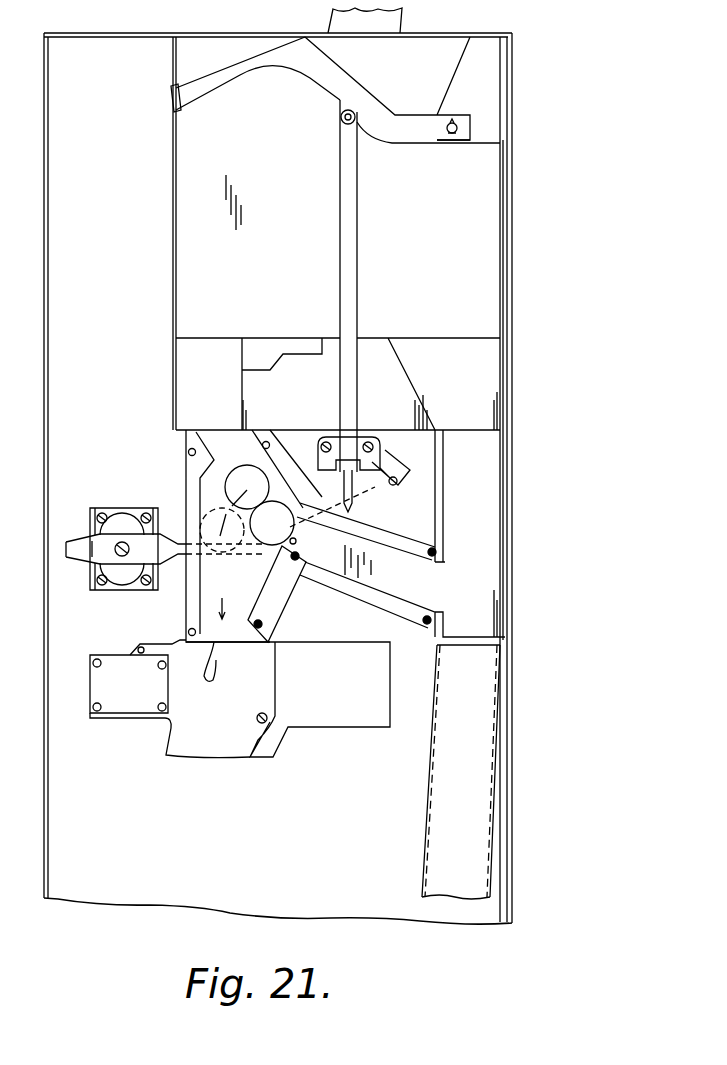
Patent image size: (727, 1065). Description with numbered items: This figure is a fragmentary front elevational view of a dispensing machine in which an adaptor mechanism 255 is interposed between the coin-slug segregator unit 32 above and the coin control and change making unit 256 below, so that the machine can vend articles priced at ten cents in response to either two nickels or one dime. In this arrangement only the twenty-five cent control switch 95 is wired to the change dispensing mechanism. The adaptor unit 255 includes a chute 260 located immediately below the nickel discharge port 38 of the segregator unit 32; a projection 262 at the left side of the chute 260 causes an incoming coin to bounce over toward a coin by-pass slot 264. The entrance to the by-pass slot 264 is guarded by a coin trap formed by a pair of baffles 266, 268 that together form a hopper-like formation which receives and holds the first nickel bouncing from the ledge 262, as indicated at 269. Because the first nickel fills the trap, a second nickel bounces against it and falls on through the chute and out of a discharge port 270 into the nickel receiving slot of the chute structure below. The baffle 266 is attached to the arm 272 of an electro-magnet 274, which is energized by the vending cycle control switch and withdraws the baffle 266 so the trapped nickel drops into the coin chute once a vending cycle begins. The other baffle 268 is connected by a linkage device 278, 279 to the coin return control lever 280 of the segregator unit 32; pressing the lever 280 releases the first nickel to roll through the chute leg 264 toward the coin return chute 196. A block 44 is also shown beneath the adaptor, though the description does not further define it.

The coin-slug segregator unit 32 is at (434, 222).
The nickel discharge port 38 is at (224, 396).
The block 44 is at (232, 718).
The 25 cent control switch 95 is at (135, 700).
The coin return chute 196 is at (470, 774).
The adaptor mechanism 255 is at (516, 545).
The coin control and change making unit 256 is at (166, 742).
The chute 260 is at (196, 444).
The projection 262 is at (214, 464).
The coin by-pass slot 264 is at (430, 598).
The baffle 266 is at (263, 553).
The baffle 268 is at (300, 580).
The first coin held in trap 269 is at (327, 491).
The discharge port 270 is at (218, 628).
The arm 272 is at (126, 560).
The electro-magnet 274 is at (117, 512).
The linkage device 278 is at (366, 500).
The linkage device 279 is at (340, 232).
The coin return control lever 280 is at (172, 92).